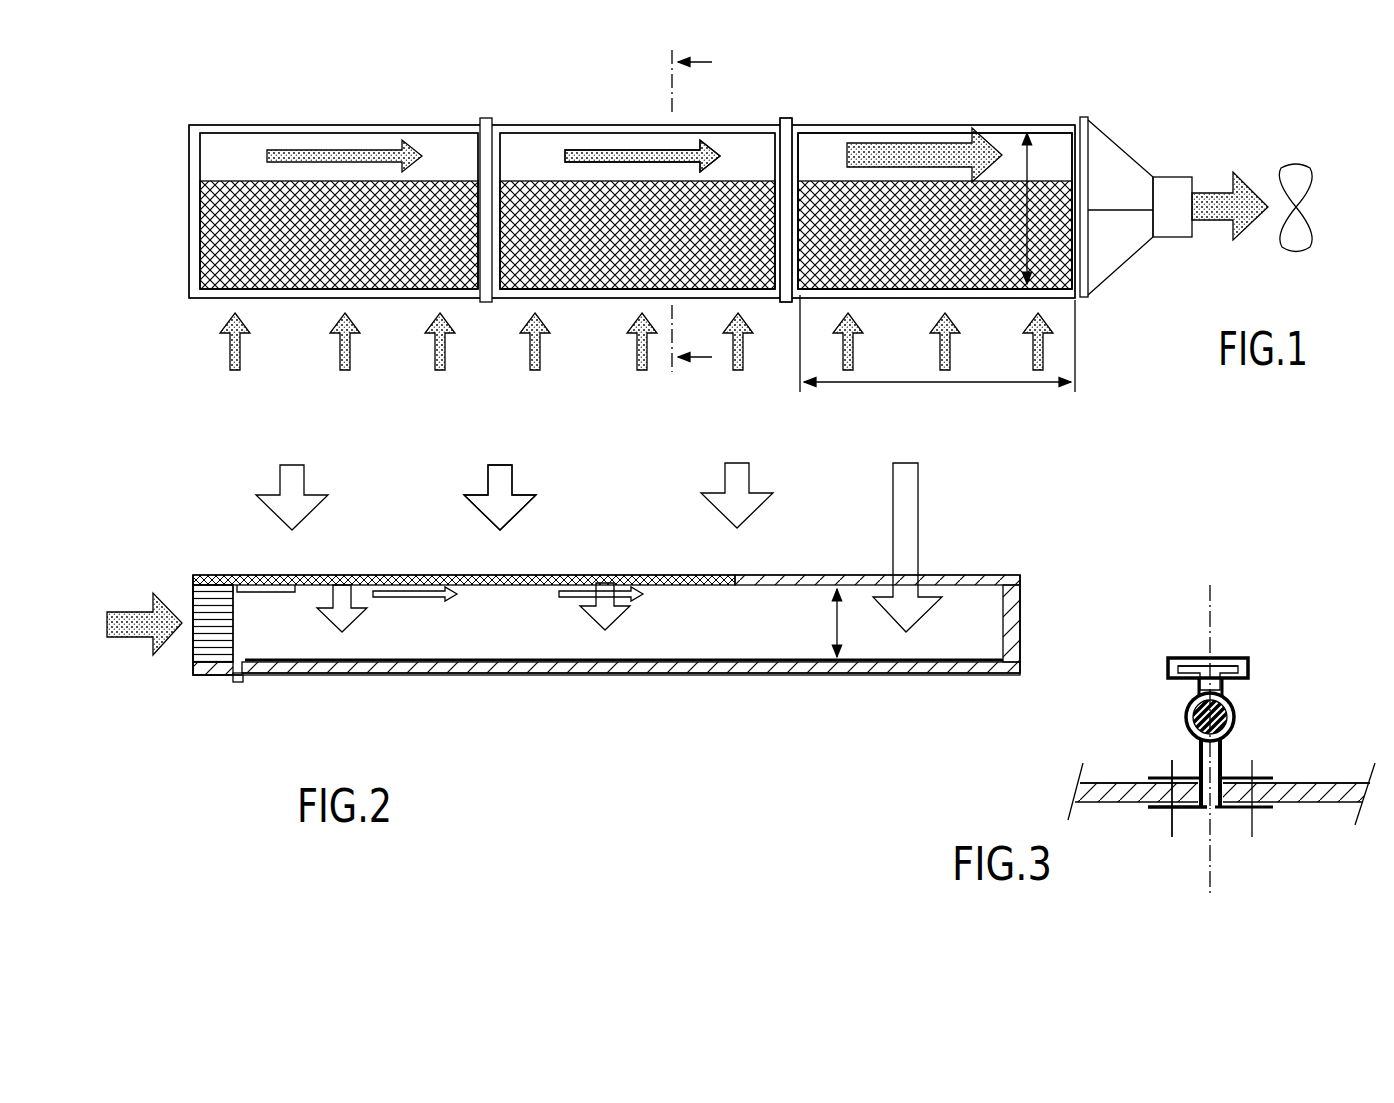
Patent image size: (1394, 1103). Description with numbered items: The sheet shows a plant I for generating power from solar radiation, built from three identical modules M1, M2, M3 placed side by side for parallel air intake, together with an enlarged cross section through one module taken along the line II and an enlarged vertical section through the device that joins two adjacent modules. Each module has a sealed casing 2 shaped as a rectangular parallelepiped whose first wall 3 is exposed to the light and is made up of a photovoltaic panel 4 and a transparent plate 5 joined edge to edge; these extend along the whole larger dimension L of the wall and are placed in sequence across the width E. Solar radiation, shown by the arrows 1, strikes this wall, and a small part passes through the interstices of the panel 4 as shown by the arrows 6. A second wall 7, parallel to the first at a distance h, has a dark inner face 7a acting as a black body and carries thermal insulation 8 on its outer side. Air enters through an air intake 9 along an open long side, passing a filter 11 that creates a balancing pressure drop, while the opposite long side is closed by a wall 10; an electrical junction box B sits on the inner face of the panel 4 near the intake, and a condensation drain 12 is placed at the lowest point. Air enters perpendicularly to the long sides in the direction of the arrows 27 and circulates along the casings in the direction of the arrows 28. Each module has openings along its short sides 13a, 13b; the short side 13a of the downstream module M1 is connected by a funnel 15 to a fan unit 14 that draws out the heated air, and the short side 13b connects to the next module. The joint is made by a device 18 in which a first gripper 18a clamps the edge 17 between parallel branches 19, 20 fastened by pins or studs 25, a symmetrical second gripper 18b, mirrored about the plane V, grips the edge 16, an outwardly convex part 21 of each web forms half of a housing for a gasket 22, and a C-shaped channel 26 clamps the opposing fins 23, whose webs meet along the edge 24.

In FIG. 2, the arrows indicating solar radiation 1 is at (742, 480).
In FIG. 1, the sealed casing 2 is at (912, 300).
In FIG. 2, the sealed casing 2 is at (548, 558).
In FIG. 1, the first wall 3 is at (676, 140).
In FIG. 2, the first wall 3 is at (670, 558).
In FIG. 1, the photovoltaic panel 4 is at (218, 238).
In FIG. 2, the photovoltaic panel 4 is at (695, 578).
In FIG. 1, the transparent plate 5 is at (447, 145).
In FIG. 2, the transparent plate 5 is at (965, 578).
In FIG. 2, the arrows indicating radiation passing through the panel 6 is at (342, 600).
In FIG. 2, the second wall 7 is at (665, 675).
In FIG. 2, the inner face of the second wall 7a is at (495, 660).
In FIG. 2, the thermal insulation 8 is at (892, 675).
In FIG. 1, the air intake 9 is at (580, 300).
In FIG. 2, the air intake 9 is at (228, 620).
In FIG. 1, the wall 10 is at (955, 122).
In FIG. 2, the wall 10 is at (1022, 620).
In FIG. 2, the filter 11 is at (212, 600).
In FIG. 2, the condensation drain 12 is at (240, 682).
In FIG. 1, the short side 13a is at (1080, 170).
In FIG. 3, the short side 13a is at (1135, 800).
In FIG. 1, the short side 13b is at (792, 275).
In FIG. 3, the short side 13b is at (1295, 800).
In FIG. 1, the fan unit 14 is at (1300, 225).
In FIG. 1, the funnel 15 is at (1118, 250).
In FIG. 3, the edge 16 is at (1228, 812).
In FIG. 3, the edge 17 is at (1203, 812).
In FIG. 3, the assembly device 18 is at (1206, 730).
In FIG. 3, the first gripper 18a is at (1200, 762).
In FIG. 3, the second gripper 18b is at (1225, 752).
In FIG. 3, the branch 19 is at (1168, 775).
In FIG. 3, the branch 20 is at (1160, 810).
In FIG. 3, the outwardly convex part 21 is at (1190, 712).
In FIG. 3, the gasket 22 is at (1236, 716).
In FIG. 3, the fin 23 is at (1185, 656).
In FIG. 3, the edge of the bent sheet 24 is at (1170, 668).
In FIG. 3, the pins or studs 25 is at (1162, 772).
In FIG. 1, the channel 26 is at (786, 156).
In FIG. 3, the channel 26 is at (1200, 656).
In FIG. 1, the arrows indicating air inflow 27 is at (340, 345).
In FIG. 2, the arrows indicating air inflow 27 is at (130, 620).
In FIG. 1, the arrows indicating air circulation 28 is at (620, 150).
In FIG. 1, the plant I is at (360, 98).
In FIG. 2, the plant I is at (800, 555).
In FIG. 1, the section line II is at (694, 210).
In FIG. 1, the module M1 is at (822, 205).
In FIG. 3, the module M1 is at (1332, 790).
In FIG. 1, the module M2 is at (535, 205).
In FIG. 2, the module M2 is at (430, 528).
In FIG. 3, the module M2 is at (1068, 790).
In FIG. 1, the module M3 is at (235, 190).
In FIG. 1, the width of the first wall E is at (1030, 165).
In FIG. 1, the larger dimension of the first wall L is at (968, 382).
In FIG. 2, the distance between the walls h is at (835, 615).
In FIG. 2, the electrical junction box B is at (258, 588).
In FIG. 3, the plane of symmetry V is at (1213, 608).